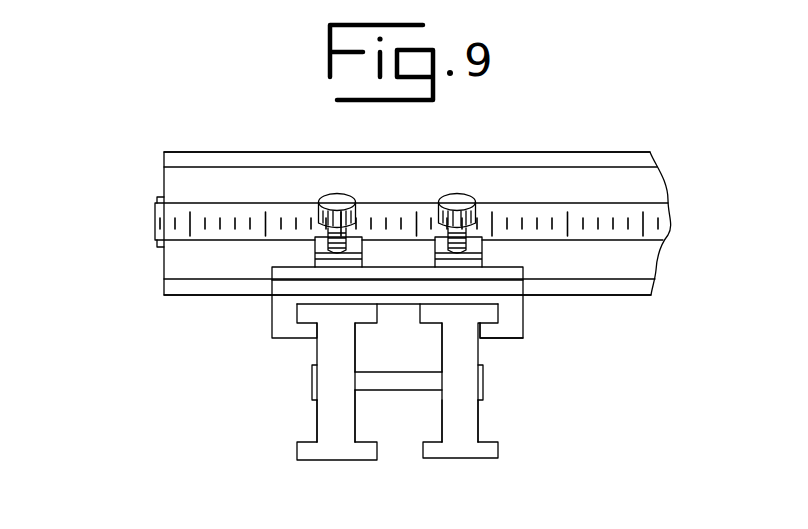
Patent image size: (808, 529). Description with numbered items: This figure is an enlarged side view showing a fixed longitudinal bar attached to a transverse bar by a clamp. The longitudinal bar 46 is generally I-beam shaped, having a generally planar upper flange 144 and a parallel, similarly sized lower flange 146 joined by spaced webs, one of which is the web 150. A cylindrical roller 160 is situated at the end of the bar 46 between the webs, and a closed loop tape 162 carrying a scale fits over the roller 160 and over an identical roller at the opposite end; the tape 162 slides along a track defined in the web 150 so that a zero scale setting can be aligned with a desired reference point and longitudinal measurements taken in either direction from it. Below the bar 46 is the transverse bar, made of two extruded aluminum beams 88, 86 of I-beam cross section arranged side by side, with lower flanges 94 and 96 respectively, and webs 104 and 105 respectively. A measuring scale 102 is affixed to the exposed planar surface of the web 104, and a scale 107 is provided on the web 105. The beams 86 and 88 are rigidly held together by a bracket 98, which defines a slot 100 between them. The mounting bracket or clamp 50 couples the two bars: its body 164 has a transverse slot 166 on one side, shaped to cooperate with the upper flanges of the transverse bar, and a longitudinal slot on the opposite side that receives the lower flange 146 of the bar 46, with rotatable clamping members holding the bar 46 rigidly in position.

The bar 46 is at (508, 158).
The upper flange 144 is at (594, 155).
The cylindrical roller 160 is at (157, 200).
The closed loop tape 162 is at (648, 233).
The web 150 is at (653, 258).
The lower flange 146 is at (647, 287).
The mounting bracket or clamp 50 is at (272, 316).
The body 164 is at (520, 303).
The transverse slot 166 is at (498, 318).
The beam 88 is at (325, 348).
The beam 86 is at (480, 360).
The measuring scale 102 is at (312, 385).
The scale 107 is at (483, 388).
The web 104 is at (326, 417).
The web 105 is at (478, 430).
The lower flange 94 is at (334, 448).
The lower flange 96 is at (473, 458).
The bracket 98 is at (392, 390).
The slot 100 is at (403, 322).